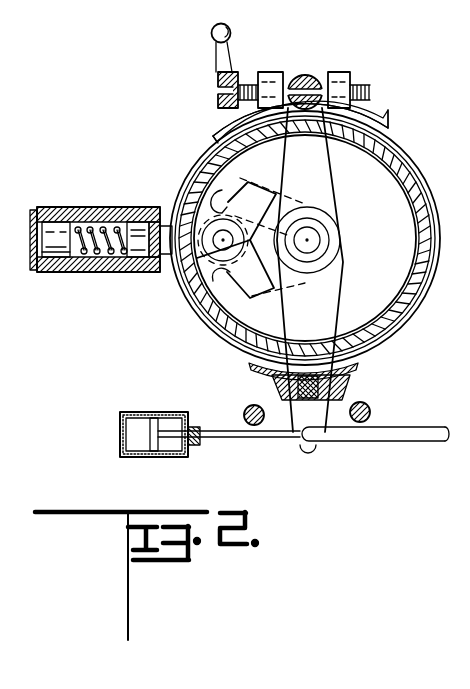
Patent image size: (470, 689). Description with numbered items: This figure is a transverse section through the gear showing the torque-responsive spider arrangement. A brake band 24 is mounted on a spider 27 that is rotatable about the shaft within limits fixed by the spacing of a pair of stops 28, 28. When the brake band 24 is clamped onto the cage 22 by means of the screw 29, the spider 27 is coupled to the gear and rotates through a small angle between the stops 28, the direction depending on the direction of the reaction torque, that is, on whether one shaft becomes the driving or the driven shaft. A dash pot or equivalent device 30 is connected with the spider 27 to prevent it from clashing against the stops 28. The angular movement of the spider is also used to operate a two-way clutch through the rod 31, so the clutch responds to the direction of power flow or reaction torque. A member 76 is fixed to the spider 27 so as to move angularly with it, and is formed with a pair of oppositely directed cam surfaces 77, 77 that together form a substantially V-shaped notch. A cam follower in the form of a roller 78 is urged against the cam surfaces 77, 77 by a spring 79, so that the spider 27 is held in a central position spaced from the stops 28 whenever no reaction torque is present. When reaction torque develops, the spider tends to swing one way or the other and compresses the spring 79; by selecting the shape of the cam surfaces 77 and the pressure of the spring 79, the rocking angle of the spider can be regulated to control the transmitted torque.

The cage 22 is at (418, 292).
The brake band 24 is at (375, 122).
The spider 27 is at (320, 183).
The stops 28 is at (247, 407).
The screw 29 is at (355, 83).
The dash pot 30 is at (170, 457).
The rod 31 is at (366, 444).
The member 76 is at (278, 196).
The cam surfaces 77 is at (219, 249).
The roller 78 is at (215, 255).
The spring 79 is at (95, 228).